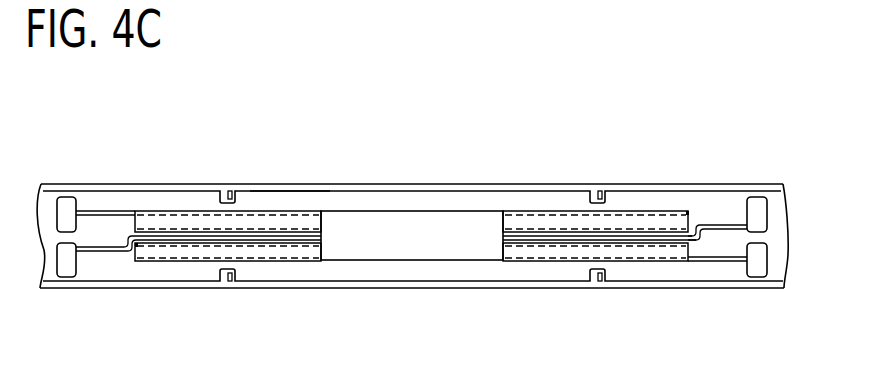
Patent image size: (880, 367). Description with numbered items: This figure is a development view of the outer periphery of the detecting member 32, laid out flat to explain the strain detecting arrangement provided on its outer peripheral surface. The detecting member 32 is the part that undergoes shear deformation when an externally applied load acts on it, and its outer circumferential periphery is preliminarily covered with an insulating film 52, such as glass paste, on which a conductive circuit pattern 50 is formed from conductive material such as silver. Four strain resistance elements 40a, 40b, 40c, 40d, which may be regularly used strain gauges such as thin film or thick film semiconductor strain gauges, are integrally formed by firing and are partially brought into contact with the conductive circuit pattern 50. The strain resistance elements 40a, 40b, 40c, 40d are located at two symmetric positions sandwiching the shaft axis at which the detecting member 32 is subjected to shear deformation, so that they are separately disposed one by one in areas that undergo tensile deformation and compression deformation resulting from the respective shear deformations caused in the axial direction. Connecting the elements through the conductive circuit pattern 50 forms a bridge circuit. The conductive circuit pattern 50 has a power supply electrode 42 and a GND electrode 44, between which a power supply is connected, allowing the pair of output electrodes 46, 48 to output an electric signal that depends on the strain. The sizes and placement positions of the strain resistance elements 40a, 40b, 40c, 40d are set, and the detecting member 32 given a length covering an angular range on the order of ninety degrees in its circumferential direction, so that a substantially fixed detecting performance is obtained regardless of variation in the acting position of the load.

The detecting member 32 is at (452, 172).
The insulating film 52 is at (283, 200).
The output electrode 46 is at (67, 209).
The power supply electrode 42 is at (67, 265).
The GND electrode 44 is at (756, 208).
The output electrode 48 is at (758, 267).
The strain resistance element 40a is at (167, 222).
The strain resistance element 40b is at (265, 252).
The strain resistance element 40c is at (570, 222).
The strain resistance element 40d is at (645, 253).
The conductive circuit pattern 50 is at (405, 262).